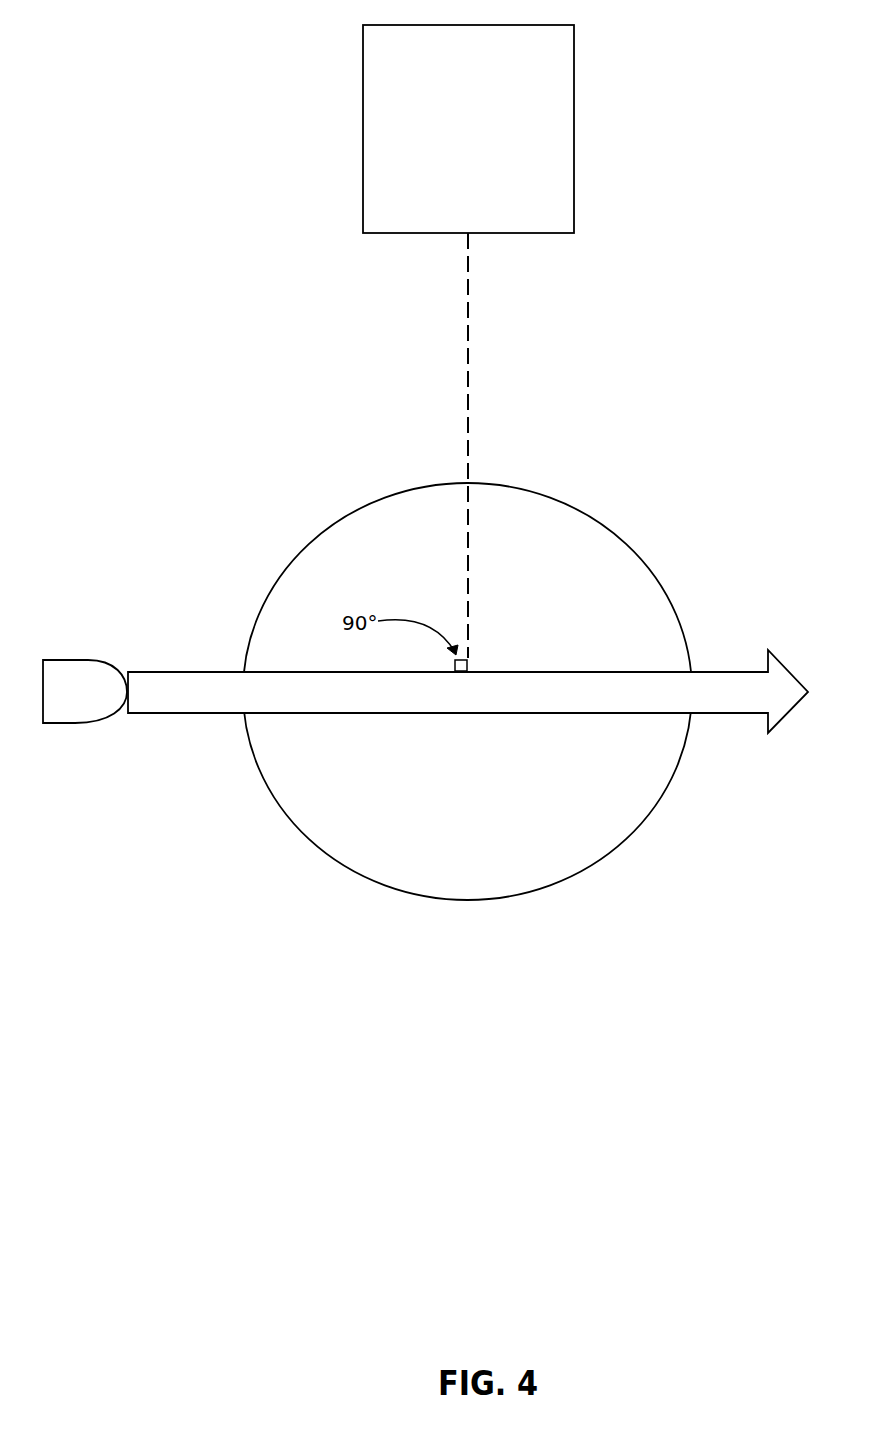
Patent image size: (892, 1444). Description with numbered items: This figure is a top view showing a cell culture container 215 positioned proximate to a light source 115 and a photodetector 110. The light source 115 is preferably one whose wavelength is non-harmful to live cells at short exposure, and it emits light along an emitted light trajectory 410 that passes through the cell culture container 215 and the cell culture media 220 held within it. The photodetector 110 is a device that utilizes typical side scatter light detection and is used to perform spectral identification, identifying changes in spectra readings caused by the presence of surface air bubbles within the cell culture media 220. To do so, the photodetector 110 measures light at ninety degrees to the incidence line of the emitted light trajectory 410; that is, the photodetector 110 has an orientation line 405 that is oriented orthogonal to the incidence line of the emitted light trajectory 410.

The photodetector 110 is at (468, 129).
The light source 115 is at (90, 660).
The cell culture container 215 is at (338, 862).
The cell culture media 220 is at (496, 695).
The orientation line 405 is at (468, 358).
The emitted light trajectory 410 is at (468, 691).